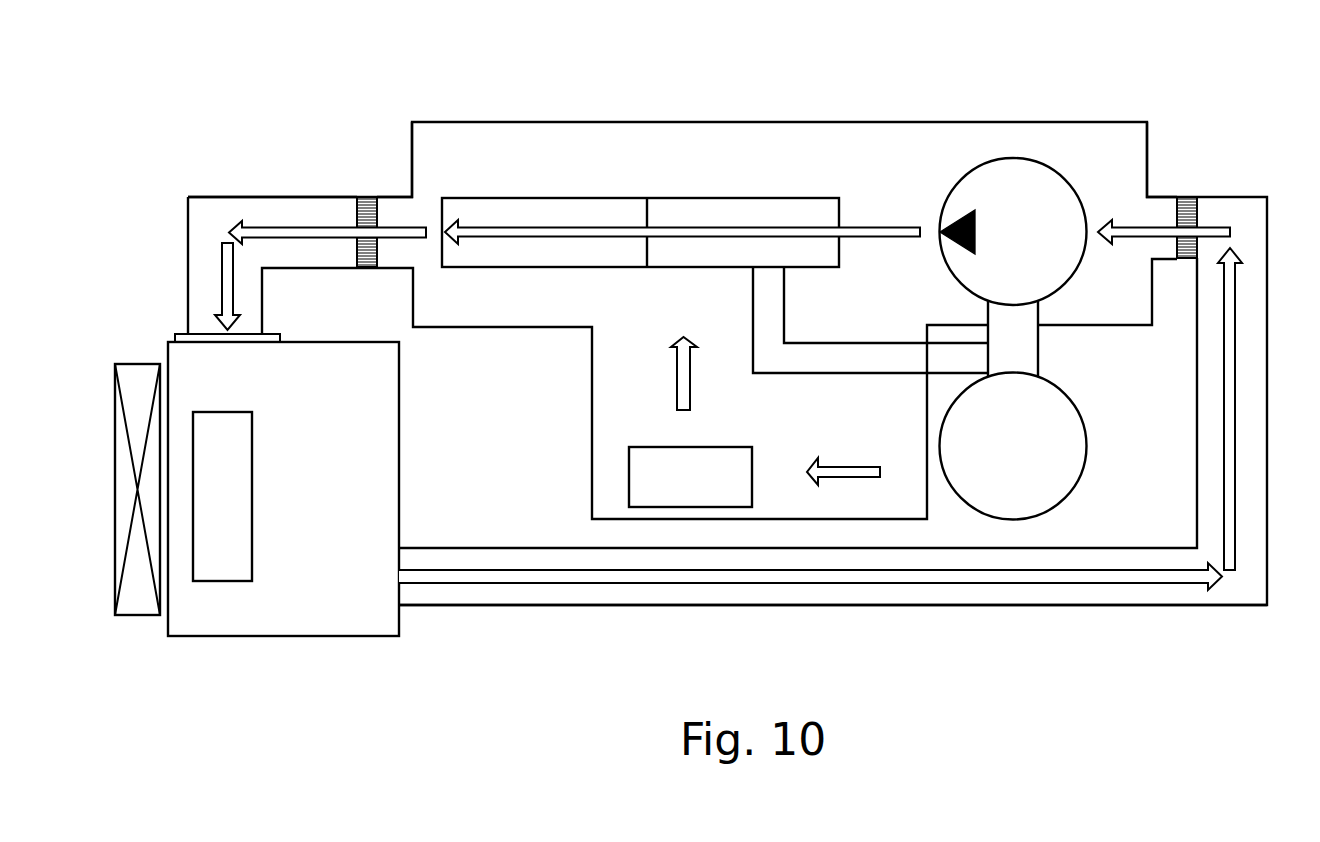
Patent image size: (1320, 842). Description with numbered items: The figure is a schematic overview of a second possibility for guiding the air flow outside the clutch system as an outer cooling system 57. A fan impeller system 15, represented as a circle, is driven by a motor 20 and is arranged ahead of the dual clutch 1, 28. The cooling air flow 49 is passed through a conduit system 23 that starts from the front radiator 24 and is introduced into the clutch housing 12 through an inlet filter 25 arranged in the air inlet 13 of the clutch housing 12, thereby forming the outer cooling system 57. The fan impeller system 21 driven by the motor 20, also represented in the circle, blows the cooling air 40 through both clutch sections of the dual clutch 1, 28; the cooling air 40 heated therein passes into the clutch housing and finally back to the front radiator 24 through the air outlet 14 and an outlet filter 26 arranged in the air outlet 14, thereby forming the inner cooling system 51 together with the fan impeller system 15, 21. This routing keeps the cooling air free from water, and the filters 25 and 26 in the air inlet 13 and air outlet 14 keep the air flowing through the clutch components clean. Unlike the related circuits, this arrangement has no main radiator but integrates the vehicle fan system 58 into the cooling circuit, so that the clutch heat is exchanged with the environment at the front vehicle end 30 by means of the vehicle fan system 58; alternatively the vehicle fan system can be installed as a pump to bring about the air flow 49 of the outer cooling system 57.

The clutch housing 12 is at (864, 142).
The air inlet 13 is at (1162, 215).
The air outlet 14 is at (300, 215).
The outlet filter 26 is at (367, 213).
The inlet filter 25 is at (1197, 212).
The dual clutch 1 is at (681, 199).
The dual clutch 28 is at (587, 215).
The outer cooling system 57 is at (229, 232).
The fan impeller system 15 is at (1073, 188).
The fan impeller system 21 is at (1073, 270).
The motor 20 is at (1072, 402).
The front radiator 24 is at (137, 388).
The front vehicle end 30 is at (253, 603).
The vehicle fan system 58 is at (247, 542).
The inner cooling system 51 is at (690, 507).
The conduit system 23 is at (1207, 468).
The cooling air flow 49 is at (1052, 605).
The cooling air 40 is at (1227, 393).